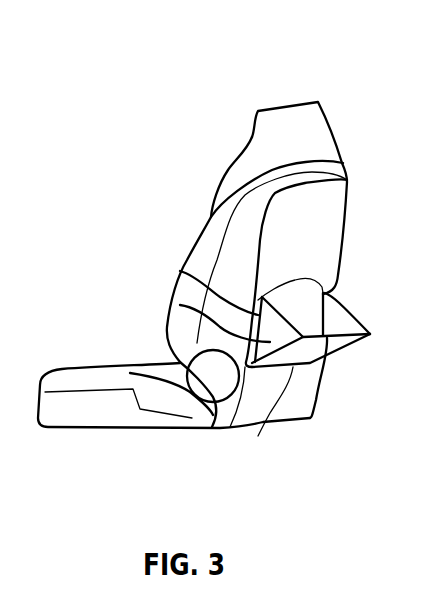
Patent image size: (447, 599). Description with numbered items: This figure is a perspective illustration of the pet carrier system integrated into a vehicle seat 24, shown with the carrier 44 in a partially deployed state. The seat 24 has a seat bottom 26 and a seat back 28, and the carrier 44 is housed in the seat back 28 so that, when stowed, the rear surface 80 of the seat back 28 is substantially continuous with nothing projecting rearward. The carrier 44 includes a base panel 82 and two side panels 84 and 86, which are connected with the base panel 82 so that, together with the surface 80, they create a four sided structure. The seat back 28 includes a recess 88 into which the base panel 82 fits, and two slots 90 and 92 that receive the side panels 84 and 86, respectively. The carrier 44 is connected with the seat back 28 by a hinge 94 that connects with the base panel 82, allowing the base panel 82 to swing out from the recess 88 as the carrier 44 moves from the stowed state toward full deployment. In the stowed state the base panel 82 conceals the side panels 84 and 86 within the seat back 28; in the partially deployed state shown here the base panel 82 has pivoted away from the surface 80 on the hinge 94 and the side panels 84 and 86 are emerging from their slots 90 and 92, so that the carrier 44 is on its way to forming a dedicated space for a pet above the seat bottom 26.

The seat 24 is at (312, 58).
The seat bottom 26 is at (83, 412).
The seat back 28 is at (317, 120).
The surface 80 is at (317, 220).
The base panel 82 is at (328, 347).
The side panel 84 is at (180, 305).
The side panel 86 is at (370, 334).
The recess 88 is at (330, 280).
The slot 90 is at (180, 271).
The slot 92 is at (337, 300).
The hinge 94 is at (258, 436).
The carrier 44 is at (360, 311).